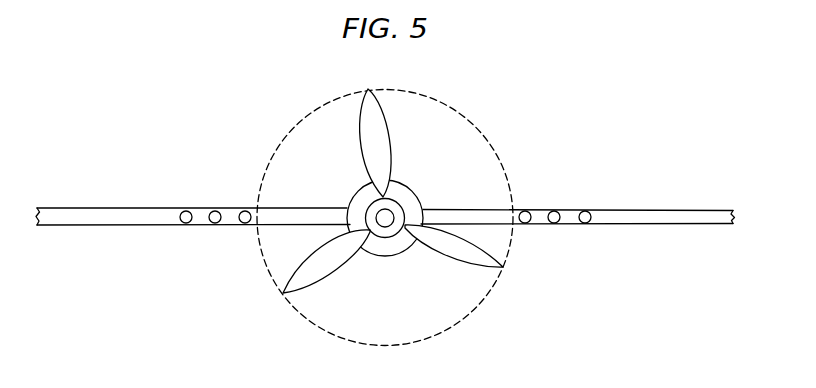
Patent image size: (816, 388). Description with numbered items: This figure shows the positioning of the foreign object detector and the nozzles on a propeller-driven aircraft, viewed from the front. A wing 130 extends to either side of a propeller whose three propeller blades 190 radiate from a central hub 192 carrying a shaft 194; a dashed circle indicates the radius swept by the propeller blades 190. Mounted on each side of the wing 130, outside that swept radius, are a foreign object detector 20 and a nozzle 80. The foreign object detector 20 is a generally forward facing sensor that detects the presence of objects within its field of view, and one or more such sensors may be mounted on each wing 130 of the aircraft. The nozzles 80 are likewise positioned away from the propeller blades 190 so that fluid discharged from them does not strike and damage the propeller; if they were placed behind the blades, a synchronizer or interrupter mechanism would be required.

The foreign object detector 20 is at (214, 223).
The nozzles 80 is at (244, 223).
The wing 130 is at (660, 225).
The propeller blades 190 is at (383, 118).
The propeller hub 192 is at (403, 195).
The propeller shaft 194 is at (384, 217).